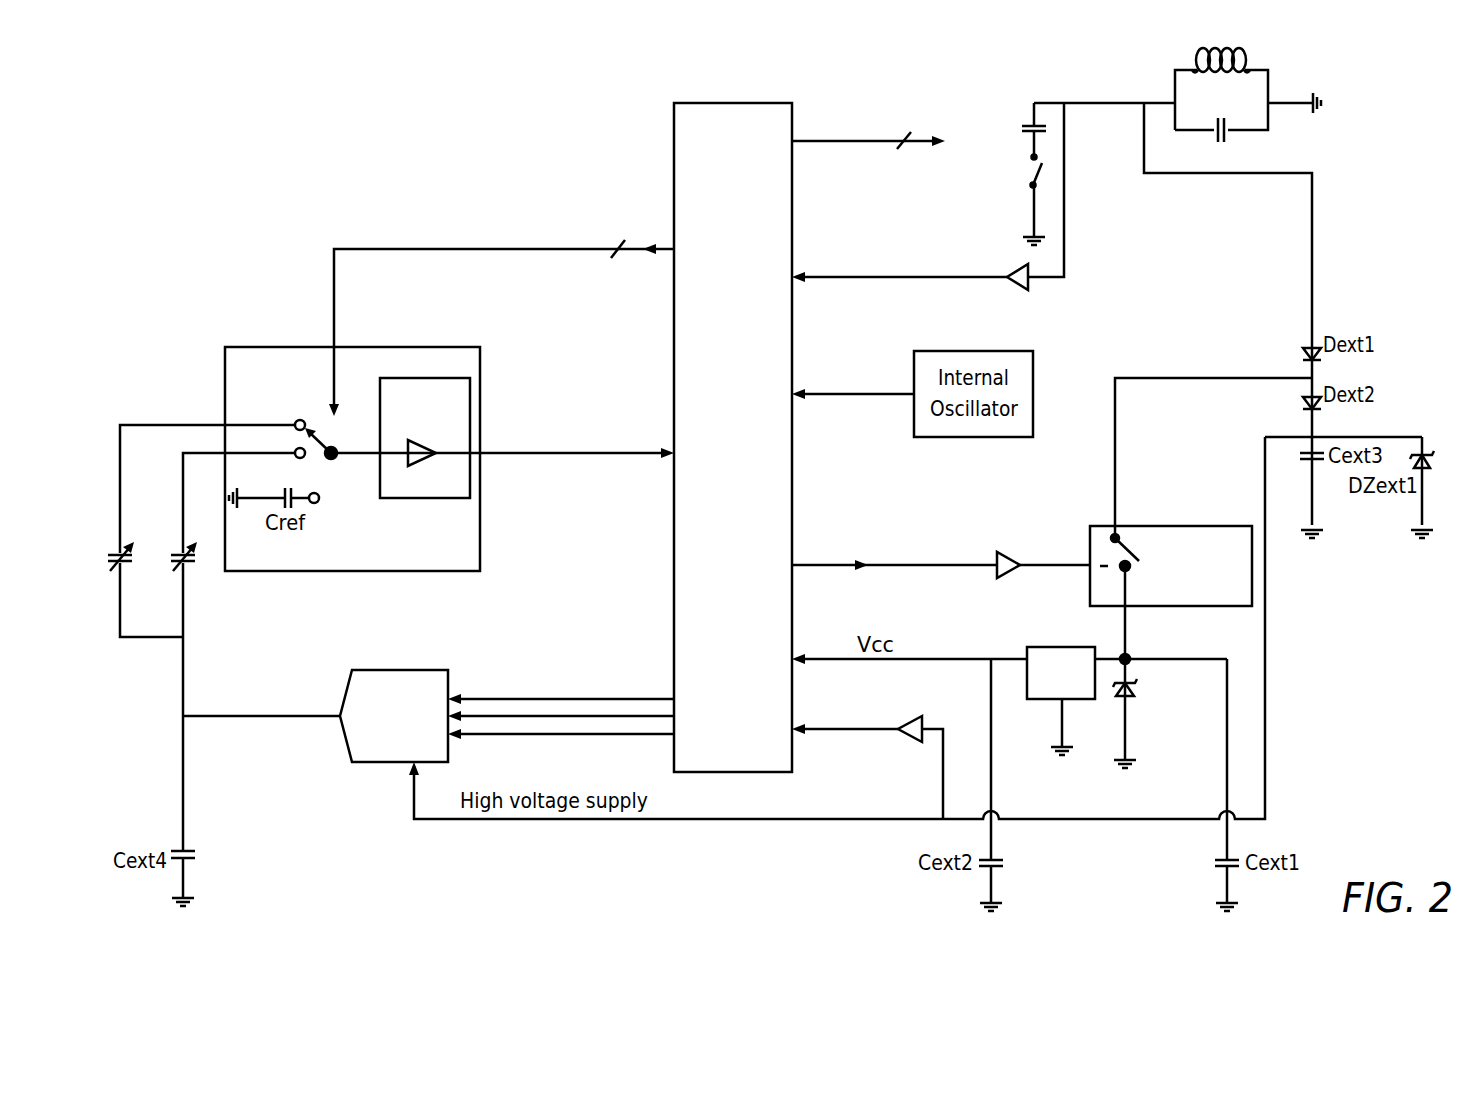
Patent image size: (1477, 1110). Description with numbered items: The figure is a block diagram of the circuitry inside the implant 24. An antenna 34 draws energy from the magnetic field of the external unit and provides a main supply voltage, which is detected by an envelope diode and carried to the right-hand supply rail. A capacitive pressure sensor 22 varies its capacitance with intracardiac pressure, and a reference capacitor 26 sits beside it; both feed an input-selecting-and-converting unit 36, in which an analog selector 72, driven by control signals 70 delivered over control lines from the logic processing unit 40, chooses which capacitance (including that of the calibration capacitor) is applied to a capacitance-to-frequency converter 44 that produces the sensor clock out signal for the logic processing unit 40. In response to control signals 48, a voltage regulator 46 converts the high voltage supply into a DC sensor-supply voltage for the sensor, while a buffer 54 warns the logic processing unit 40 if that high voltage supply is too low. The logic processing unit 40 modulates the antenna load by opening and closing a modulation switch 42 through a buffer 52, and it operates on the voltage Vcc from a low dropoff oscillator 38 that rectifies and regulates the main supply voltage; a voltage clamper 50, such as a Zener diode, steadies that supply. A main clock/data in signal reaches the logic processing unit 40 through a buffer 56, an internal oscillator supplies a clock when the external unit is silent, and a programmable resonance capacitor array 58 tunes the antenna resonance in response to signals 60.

The implant 24 is at (170, 97).
The antenna 34 is at (1268, 50).
The input-selecting-and-converting unit 36 is at (437, 346).
The capacitance-to-frequency converter 44 is at (420, 500).
The analog selector 72 is at (320, 455).
The control signals 70 is at (333, 257).
The reference capacitor 26 is at (116, 567).
The capacitive pressure sensor 22 is at (176, 567).
The voltage regulator 46 is at (402, 670).
The control signals 48 is at (619, 697).
The logic processing unit 40 is at (674, 591).
The signals 60 is at (874, 128).
The programmable resonance capacitor array 58 is at (1004, 124).
The buffer 56 is at (1015, 290).
The modulation switch 42 is at (1173, 526).
The buffer 52 is at (1006, 550).
The low dropoff oscillator 38 is at (1046, 647).
The voltage clamper 50 is at (1136, 690).
The buffer 54 is at (910, 744).